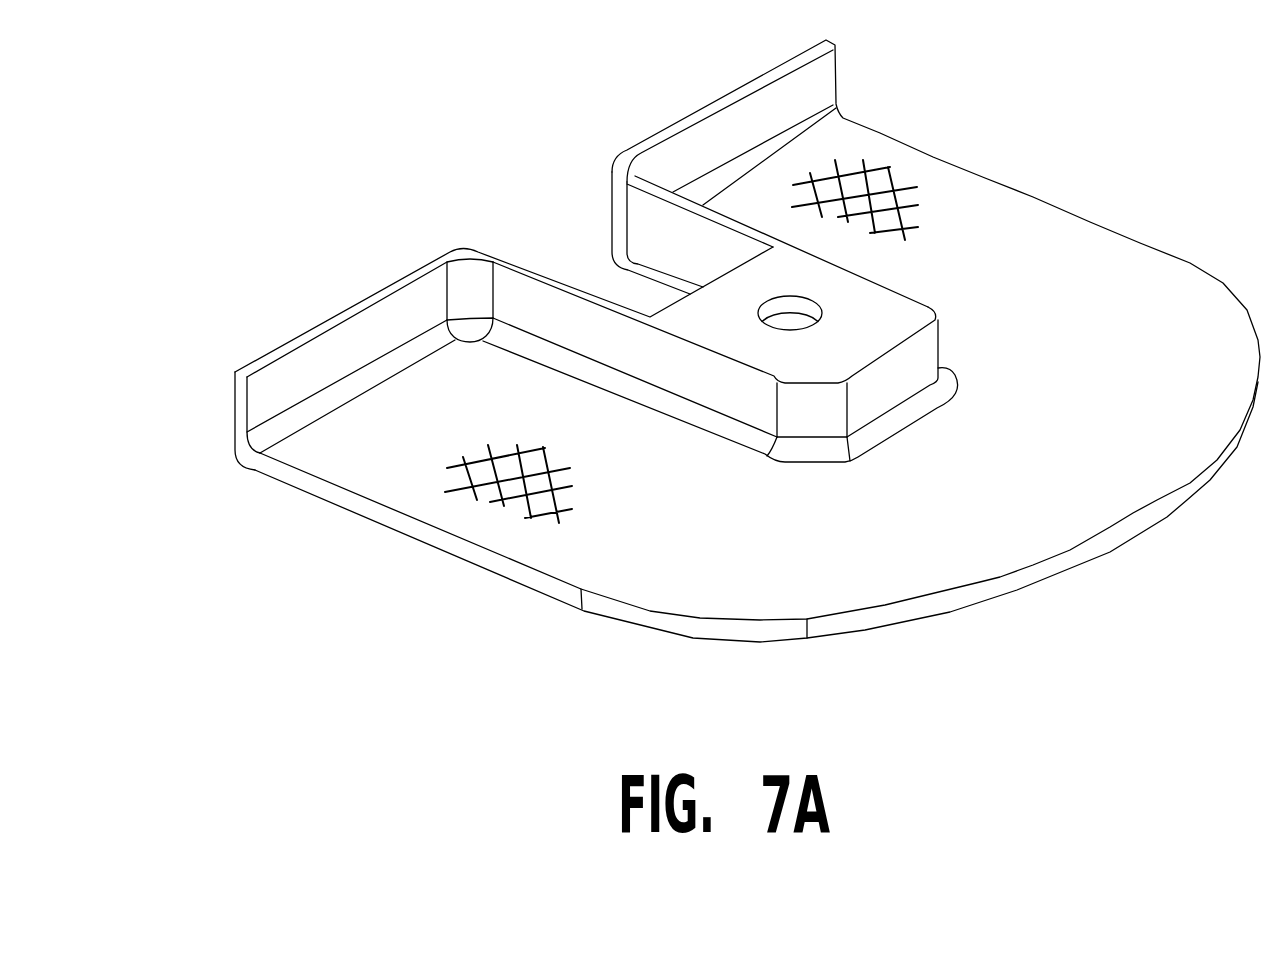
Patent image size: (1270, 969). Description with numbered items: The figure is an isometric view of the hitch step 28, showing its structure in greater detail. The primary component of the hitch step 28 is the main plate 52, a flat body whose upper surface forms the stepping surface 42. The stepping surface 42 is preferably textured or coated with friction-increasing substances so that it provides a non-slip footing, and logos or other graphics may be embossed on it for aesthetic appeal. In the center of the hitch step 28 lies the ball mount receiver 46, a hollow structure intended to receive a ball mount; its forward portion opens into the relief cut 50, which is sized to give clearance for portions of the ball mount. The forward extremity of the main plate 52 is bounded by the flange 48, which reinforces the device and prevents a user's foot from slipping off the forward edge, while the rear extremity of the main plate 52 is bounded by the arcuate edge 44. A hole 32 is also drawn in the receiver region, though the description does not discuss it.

The hitch step 28 is at (497, 623).
The hole 32 is at (827, 317).
The stepping surface 42 is at (940, 190).
The arcuate edge 44 is at (943, 605).
The ball mount receiver 46 is at (900, 373).
The flange 48 is at (692, 112).
The relief cut 50 is at (592, 237).
The main plate 52 is at (885, 605).